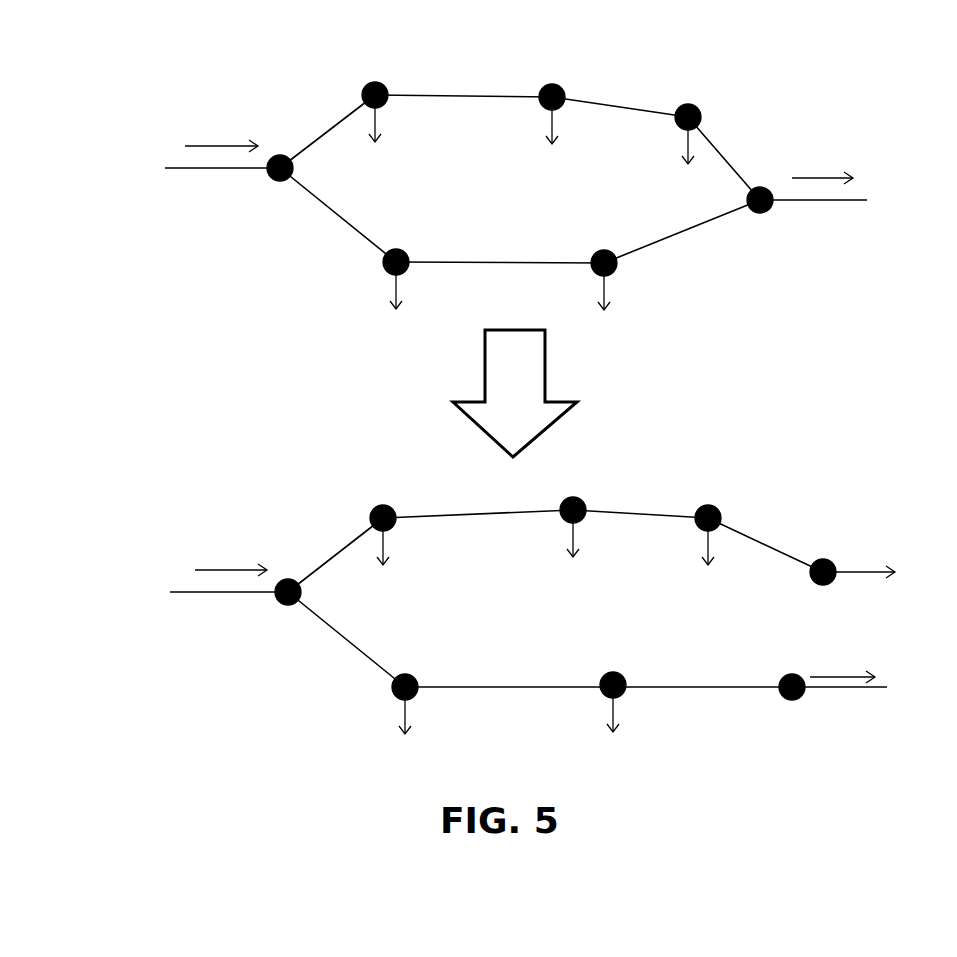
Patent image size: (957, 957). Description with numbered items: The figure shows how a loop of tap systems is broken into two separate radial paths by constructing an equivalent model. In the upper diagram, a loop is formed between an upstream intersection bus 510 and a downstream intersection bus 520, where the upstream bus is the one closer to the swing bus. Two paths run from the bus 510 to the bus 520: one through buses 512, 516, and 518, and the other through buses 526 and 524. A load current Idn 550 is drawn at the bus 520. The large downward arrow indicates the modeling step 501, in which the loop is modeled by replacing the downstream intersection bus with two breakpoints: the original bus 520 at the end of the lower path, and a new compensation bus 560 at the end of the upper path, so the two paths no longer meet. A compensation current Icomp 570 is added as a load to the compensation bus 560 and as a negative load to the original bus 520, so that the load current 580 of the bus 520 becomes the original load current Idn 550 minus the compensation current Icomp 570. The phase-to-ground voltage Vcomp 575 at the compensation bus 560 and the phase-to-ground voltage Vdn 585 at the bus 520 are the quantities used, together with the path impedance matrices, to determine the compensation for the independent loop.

The upstream intersection bus 510 is at (289, 156).
The bus 512 is at (390, 95).
The bus 516 is at (600, 47).
The bus 518 is at (733, 82).
The downstream intersection bus 520 is at (772, 208).
The bus 524 is at (626, 265).
The bus 526 is at (370, 268).
The load current Idn 550 is at (838, 143).
The loop modeling step 501 is at (515, 393).
The compensation bus 560 is at (825, 556).
The compensation current Icomp 570 is at (898, 560).
The phase-to-ground voltage Vcomp 575 is at (793, 610).
The load current of the downstream bus 580 is at (890, 672).
The phase-to-ground voltage Vdn 585 is at (768, 722).